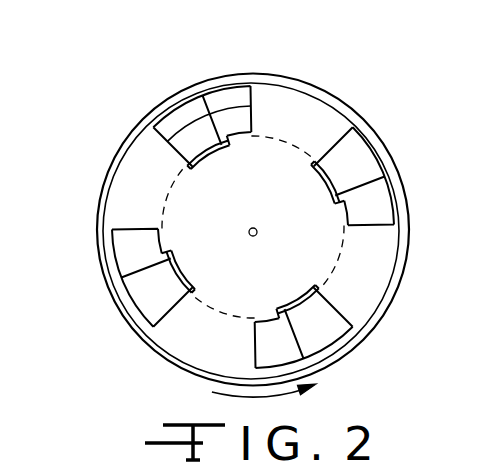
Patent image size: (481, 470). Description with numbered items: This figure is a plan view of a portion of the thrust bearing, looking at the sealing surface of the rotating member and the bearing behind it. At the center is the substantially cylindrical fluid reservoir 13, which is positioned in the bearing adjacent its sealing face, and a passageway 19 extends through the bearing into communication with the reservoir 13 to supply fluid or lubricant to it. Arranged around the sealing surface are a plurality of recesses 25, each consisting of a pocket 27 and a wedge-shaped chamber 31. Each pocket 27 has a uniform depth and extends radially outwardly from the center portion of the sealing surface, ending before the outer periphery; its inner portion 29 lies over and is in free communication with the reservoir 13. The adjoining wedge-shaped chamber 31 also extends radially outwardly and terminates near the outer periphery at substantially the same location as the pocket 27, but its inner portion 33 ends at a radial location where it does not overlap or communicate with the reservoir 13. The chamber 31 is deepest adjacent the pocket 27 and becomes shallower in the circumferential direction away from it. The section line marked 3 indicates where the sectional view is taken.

The section line 3- 3 is at (267, 110).
The reservoir 13 is at (158, 216).
The passageway 19 is at (249, 238).
The recess 25 is at (378, 142).
The pocket 27 is at (363, 162).
The inner portion of the pocket 29 is at (312, 160).
The wedge-shaped chamber 31 is at (370, 200).
The inner portion of the wedge-shaped chamber 33 is at (343, 246).